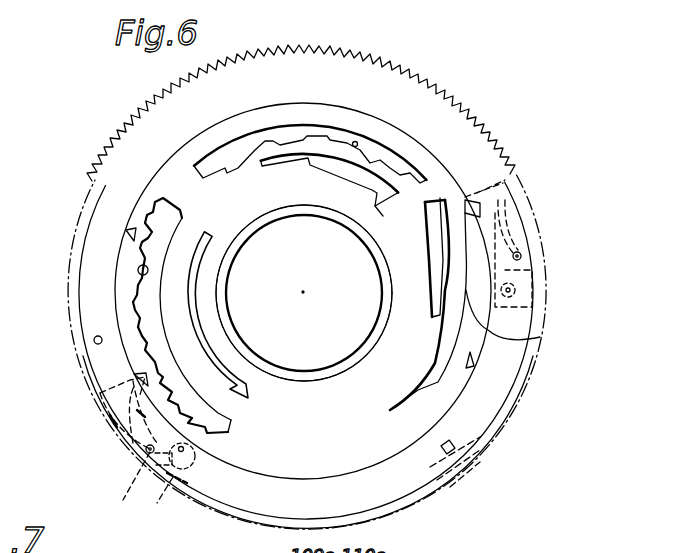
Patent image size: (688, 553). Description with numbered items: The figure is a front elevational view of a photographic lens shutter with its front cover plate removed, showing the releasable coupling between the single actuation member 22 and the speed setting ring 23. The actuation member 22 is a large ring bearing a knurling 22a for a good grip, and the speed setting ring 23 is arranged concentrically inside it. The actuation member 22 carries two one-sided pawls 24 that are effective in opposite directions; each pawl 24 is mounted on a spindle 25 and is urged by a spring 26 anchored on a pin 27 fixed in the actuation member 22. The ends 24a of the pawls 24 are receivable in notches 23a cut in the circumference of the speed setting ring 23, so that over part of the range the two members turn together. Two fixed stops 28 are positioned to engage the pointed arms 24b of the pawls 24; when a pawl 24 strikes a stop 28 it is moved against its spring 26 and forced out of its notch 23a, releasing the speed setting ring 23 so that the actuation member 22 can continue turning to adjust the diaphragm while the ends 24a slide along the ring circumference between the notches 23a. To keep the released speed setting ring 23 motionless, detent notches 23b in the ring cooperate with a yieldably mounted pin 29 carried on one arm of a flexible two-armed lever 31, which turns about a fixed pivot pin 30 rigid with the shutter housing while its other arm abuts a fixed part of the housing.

The single actuation member 22 is at (307, 277).
The knurling 22a is at (372, 46).
The speed setting ring 23 is at (363, 453).
The notches 23a is at (128, 232).
The detent notches 23b is at (130, 290).
The pawls 24 is at (505, 268).
The pawl ends 24a is at (78, 410).
The pointed arms 24b is at (515, 290).
The spindles 25 is at (523, 337).
The springs 26 is at (522, 242).
The pins 27 is at (521, 256).
The fixed stops 28 is at (456, 451).
The pin 29 is at (147, 271).
The fixed pivot pin 30 is at (125, 312).
The two-armed lever 31 is at (120, 340).